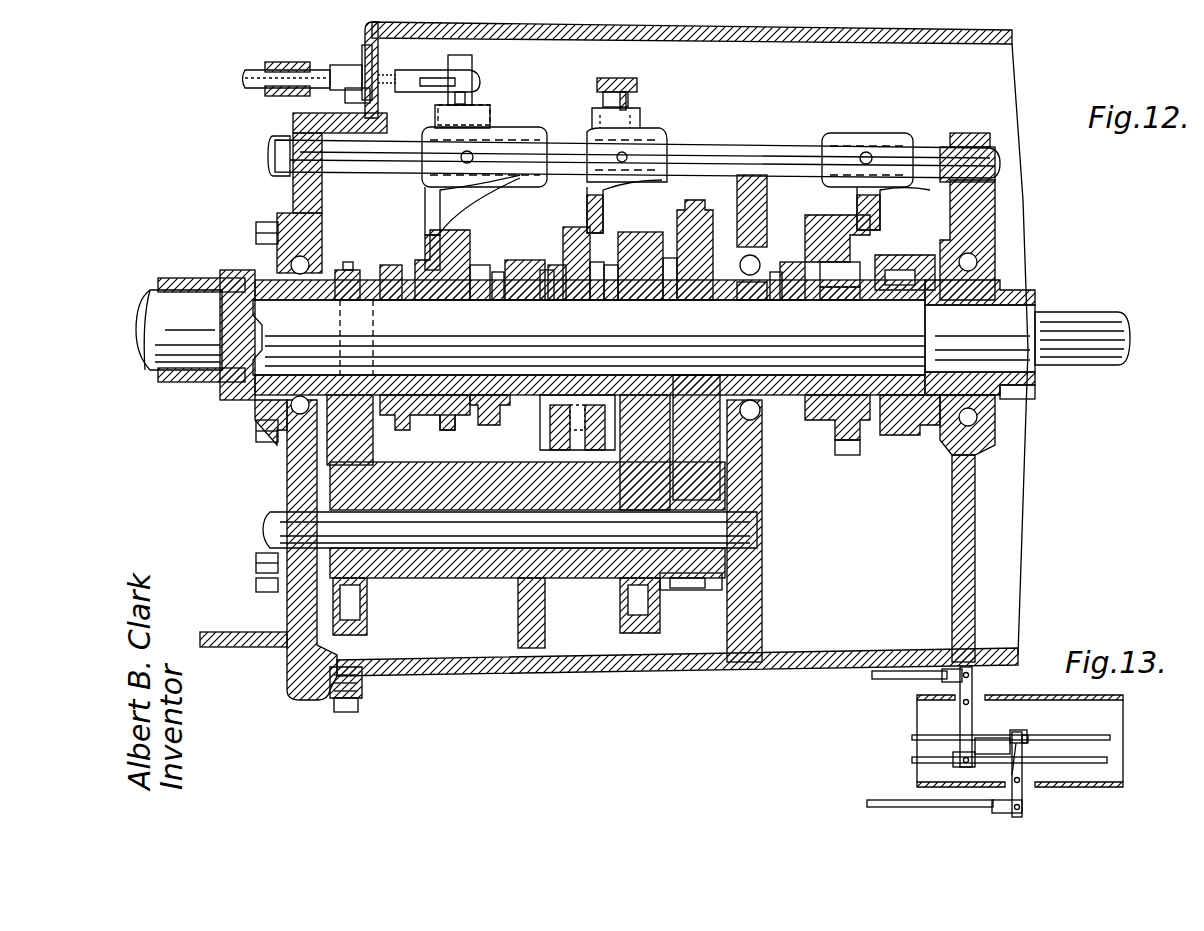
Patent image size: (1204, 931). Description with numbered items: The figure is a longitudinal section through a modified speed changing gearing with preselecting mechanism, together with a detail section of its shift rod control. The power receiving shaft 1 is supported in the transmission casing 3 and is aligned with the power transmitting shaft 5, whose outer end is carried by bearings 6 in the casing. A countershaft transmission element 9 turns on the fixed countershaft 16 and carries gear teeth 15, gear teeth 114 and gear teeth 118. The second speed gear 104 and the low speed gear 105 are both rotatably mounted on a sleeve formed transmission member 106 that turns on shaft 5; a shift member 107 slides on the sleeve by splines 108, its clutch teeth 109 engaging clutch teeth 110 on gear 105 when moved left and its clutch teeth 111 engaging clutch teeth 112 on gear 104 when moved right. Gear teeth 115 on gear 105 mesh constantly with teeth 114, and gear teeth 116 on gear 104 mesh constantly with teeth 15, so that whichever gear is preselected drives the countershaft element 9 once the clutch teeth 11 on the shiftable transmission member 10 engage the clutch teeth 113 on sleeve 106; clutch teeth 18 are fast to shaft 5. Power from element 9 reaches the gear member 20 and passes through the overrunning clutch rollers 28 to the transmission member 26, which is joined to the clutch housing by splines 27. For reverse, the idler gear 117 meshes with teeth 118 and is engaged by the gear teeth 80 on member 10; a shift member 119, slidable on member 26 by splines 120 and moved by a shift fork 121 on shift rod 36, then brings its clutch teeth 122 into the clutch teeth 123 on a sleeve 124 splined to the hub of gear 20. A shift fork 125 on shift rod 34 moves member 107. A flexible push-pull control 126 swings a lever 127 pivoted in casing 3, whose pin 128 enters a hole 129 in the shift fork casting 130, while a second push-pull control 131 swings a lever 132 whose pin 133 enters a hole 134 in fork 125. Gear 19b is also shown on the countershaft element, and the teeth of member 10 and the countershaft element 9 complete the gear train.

In FIG. 12, the transmission power receiving shaft 1 is at (160, 305).
In FIG. 12, the transmission casing 3 is at (668, 666).
In FIG. 13, the transmission casing 3 is at (1072, 788).
In FIG. 12, the power transmitting shaft 5 is at (691, 337).
In FIG. 12, the bearings 6 is at (996, 248).
In FIG. 12, the countershaft transmission element 9 is at (468, 578).
In FIG. 12, the transmission member 10 is at (412, 418).
In FIG. 12, the clutch teeth 11 is at (448, 428).
In FIG. 12, the gear teeth 15 is at (652, 635).
In FIG. 12, the fixed countershaft 16 is at (758, 527).
In FIG. 12, the clutch teeth 18 is at (474, 270).
In FIG. 12, the gear 19b is at (690, 590).
In FIG. 12, the gear member 20 is at (695, 210).
In FIG. 12, the transmission member 26 is at (1035, 298).
In FIG. 12, the splines 27 is at (1027, 398).
In FIG. 12, the rollers 28 is at (895, 270).
In FIG. 12, the shift rod 34 is at (283, 165).
In FIG. 13, the shift rod 34 is at (1068, 735).
In FIG. 12, the shift rod 36 is at (330, 148).
In FIG. 13, the shift rod 36 is at (1090, 763).
In FIG. 12, the gear teeth 80 is at (390, 265).
In FIG. 12, the second speed gear 104 is at (650, 232).
In FIG. 12, the low speed gear 105 is at (482, 265).
In FIG. 12, the sleeve formed transmission member 106 is at (498, 272).
In FIG. 12, the shift member 107 is at (572, 227).
In FIG. 12, the splines 108 is at (577, 429).
In FIG. 12, the clutch teeth 109 is at (555, 265).
In FIG. 12, the clutch teeth 110 is at (545, 270).
In FIG. 12, the clutch teeth 111 is at (598, 262).
In FIG. 12, the clutch teeth 112 is at (612, 265).
In FIG. 12, the clutch teeth 113 is at (495, 402).
In FIG. 12, the gear teeth 114 is at (540, 648).
In FIG. 12, the gear teeth 115 is at (528, 260).
In FIG. 12, the gear teeth 116 is at (670, 258).
In FIG. 12, the idler gear 117 is at (348, 270).
In FIG. 12, the gear teeth 118 is at (367, 630).
In FIG. 12, the shift member 119 is at (830, 211).
In FIG. 12, the splines 120 is at (925, 440).
In FIG. 12, the shift fork 121 is at (885, 190).
In FIG. 12, the clutch teeth 122 is at (792, 262).
In FIG. 12, the clutch teeth 123 is at (778, 272).
In FIG. 12, the sleeve 124 is at (840, 278).
In FIG. 12, the shift fork 125 is at (600, 195).
In FIG. 13, the shift fork 125 is at (1012, 760).
In FIG. 12, the flexible push-pull control 126 is at (258, 70).
In FIG. 13, the flexible push-pull control 126 is at (885, 680).
In FIG. 12, the lever 127 is at (482, 80).
In FIG. 13, the lever 127 is at (972, 717).
In FIG. 12, the pin 128 is at (475, 95).
In FIG. 13, the pin 128 is at (958, 752).
In FIG. 12, the hole 129 is at (437, 113).
In FIG. 12, the shift fork casting 130 is at (667, 157).
In FIG. 13, the shift fork casting 130 is at (994, 748).
In FIG. 13, the push-pull control 131 is at (880, 800).
In FIG. 12, the lever 132 is at (620, 78).
In FIG. 13, the lever 132 is at (1022, 733).
In FIG. 12, the pin 133 is at (630, 100).
In FIG. 13, the pin 133 is at (1028, 742).
In FIG. 12, the hole 134 is at (625, 118).